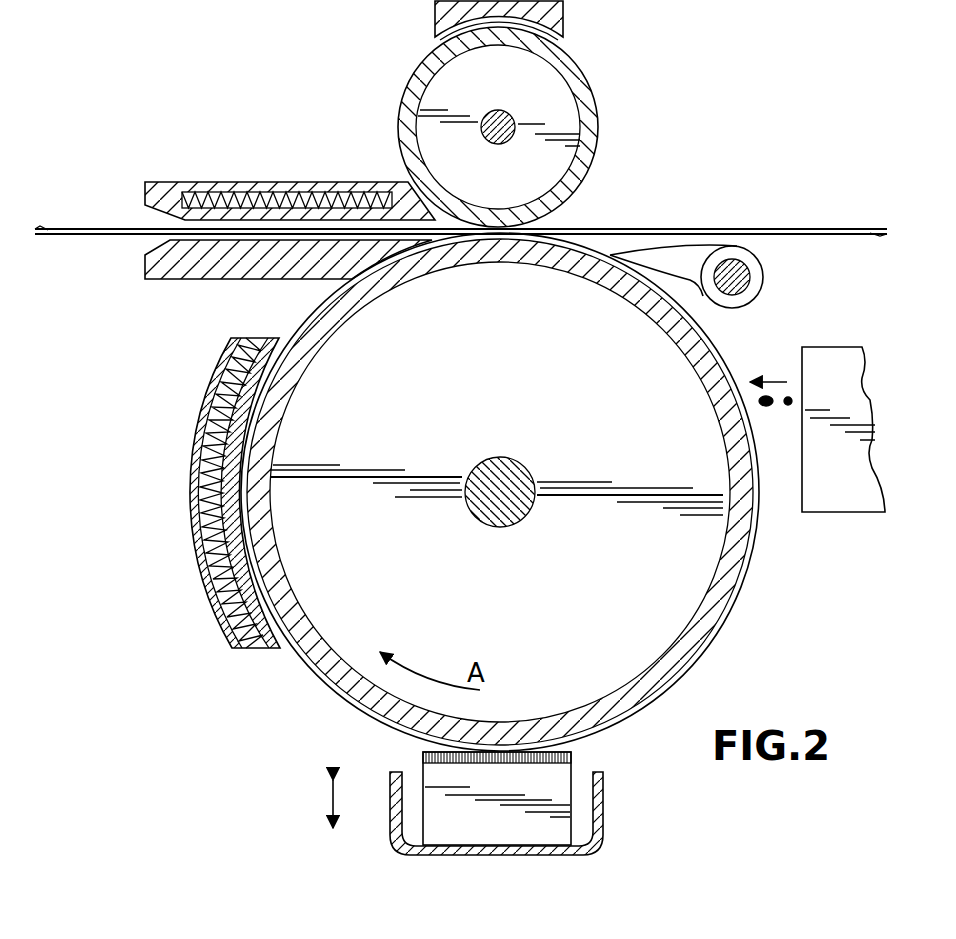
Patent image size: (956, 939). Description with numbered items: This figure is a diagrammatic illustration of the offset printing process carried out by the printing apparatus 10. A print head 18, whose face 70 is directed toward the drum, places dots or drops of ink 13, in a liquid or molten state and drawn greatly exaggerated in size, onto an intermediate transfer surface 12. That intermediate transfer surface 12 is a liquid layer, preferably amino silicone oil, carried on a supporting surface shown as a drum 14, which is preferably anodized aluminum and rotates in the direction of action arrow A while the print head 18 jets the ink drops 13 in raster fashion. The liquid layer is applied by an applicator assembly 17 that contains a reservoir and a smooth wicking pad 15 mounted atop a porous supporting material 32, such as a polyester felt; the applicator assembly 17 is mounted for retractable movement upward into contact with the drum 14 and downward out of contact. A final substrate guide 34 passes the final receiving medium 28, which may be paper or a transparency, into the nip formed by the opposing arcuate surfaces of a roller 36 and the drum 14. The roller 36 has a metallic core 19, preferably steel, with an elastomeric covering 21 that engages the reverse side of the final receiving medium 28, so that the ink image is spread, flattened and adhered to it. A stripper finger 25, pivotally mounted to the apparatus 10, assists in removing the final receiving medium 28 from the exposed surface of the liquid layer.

The printing apparatus 10 is at (754, 100).
The intermediate transfer surface 12 is at (745, 580).
The ink drops 13 is at (768, 408).
The drum 14 is at (702, 590).
The wicking pad 15 is at (572, 762).
The applicator assembly 17 is at (530, 856).
The print head 18 is at (832, 347).
The metallic core 19 is at (555, 80).
The elastomeric covering 21 is at (600, 135).
The stripper finger 25 is at (765, 281).
The final receiving medium 28 is at (102, 227).
The porous supporting material 32 is at (420, 800).
The final substrate guide 34 is at (190, 281).
The roller 36 is at (388, 70).
The face of the print head 70 is at (800, 363).